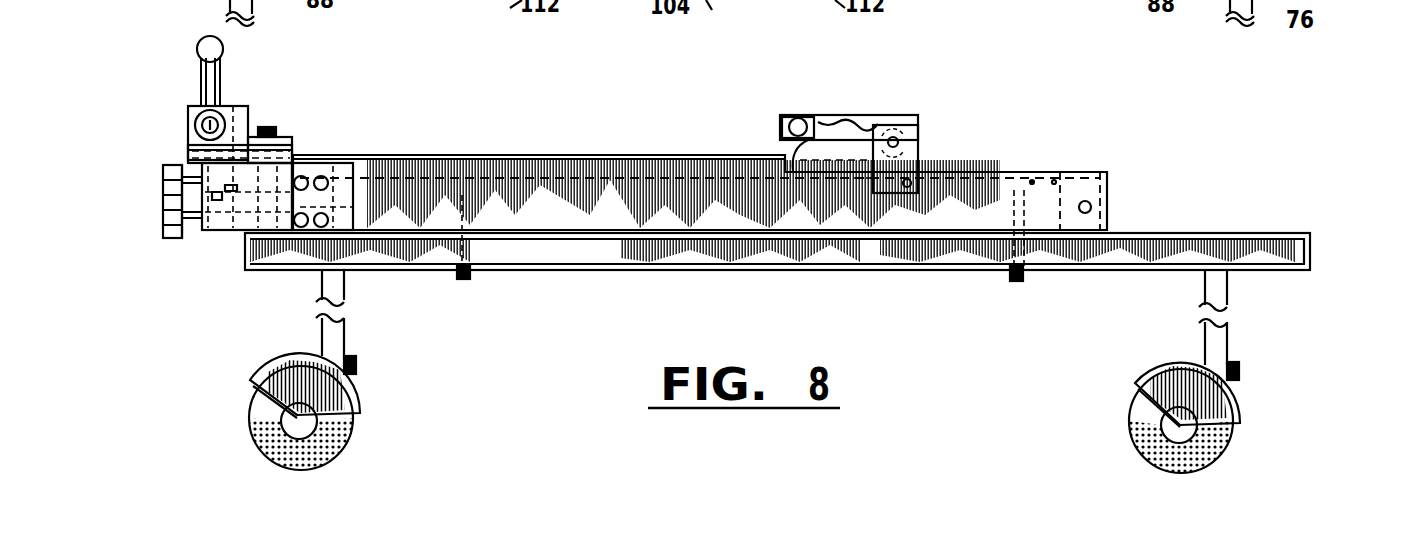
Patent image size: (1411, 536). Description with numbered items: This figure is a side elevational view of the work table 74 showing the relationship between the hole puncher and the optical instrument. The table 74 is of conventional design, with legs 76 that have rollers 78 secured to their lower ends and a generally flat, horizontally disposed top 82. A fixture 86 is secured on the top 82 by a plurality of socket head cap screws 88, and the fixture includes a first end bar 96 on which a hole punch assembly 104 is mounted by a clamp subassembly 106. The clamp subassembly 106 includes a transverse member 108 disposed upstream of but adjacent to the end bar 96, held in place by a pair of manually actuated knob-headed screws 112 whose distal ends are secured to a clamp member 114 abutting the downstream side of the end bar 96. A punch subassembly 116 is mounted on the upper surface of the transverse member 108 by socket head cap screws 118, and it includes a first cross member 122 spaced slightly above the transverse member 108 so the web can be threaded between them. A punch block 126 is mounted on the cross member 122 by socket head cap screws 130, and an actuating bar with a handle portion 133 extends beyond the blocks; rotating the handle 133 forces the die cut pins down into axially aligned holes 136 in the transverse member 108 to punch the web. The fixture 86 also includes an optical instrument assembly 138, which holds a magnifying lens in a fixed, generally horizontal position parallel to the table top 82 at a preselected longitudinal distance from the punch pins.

The table 74 is at (816, 193).
The legs 76 is at (322, 344).
The rollers 78 is at (252, 427).
The top 82 is at (1190, 232).
The fixture 86 is at (1102, 134).
The socket head cap screws 88 is at (472, 276).
The first end bar 96 is at (310, 165).
The hole punch assembly 104 is at (250, 160).
The clamp subassembly 106 is at (148, 232).
The transverse member 108 is at (245, 222).
The knob-headed screws 112 is at (170, 202).
The clamp member 114 is at (346, 203).
The punch subassembly 116 is at (234, 85).
The socket head cap screws 118 is at (269, 136).
The first cross member 122 is at (281, 135).
The punch block 126 is at (242, 105).
The socket head cap screws 130 is at (188, 150).
The handle portion 133 is at (208, 42).
The holes 136 is at (210, 232).
The optical instrument assembly 138 is at (912, 76).